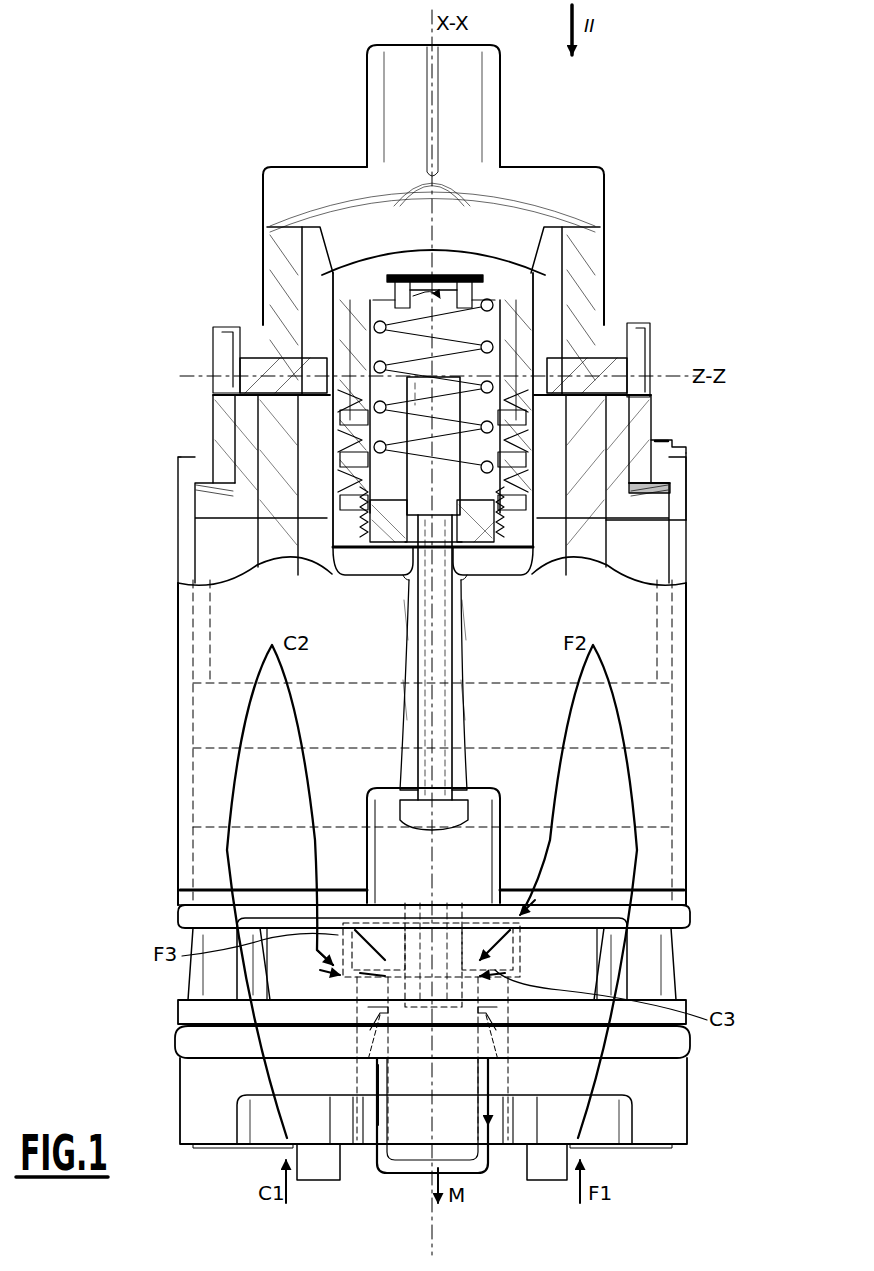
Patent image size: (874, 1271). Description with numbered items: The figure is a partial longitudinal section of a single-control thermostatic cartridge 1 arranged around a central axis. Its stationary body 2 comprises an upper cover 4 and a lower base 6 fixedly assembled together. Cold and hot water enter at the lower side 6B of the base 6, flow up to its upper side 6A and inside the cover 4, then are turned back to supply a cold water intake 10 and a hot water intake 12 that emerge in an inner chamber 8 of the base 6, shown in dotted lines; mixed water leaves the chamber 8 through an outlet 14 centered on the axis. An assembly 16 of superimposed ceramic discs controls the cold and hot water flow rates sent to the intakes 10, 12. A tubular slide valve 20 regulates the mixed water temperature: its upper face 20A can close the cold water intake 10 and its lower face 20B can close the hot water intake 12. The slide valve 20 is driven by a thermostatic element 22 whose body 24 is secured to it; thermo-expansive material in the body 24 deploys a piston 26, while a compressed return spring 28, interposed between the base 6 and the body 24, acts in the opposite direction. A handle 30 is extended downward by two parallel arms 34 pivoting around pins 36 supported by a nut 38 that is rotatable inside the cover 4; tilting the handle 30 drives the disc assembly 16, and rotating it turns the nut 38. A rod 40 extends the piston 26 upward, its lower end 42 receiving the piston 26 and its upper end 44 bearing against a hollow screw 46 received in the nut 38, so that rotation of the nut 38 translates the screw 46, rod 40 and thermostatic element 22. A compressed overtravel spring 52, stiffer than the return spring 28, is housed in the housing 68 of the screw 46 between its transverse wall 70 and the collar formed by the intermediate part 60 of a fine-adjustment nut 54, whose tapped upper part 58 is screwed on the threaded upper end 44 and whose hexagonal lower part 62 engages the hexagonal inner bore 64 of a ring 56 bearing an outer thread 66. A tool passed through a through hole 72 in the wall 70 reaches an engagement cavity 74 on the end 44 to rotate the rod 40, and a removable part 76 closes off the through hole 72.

The single-control thermostatic cartridge 1 is at (150, 692).
The body 2 is at (105, 958).
The upper cover 4 is at (180, 797).
The lower base 6 is at (207, 983).
The upper side of the base 6A is at (660, 825).
The lower side of the base 6B is at (208, 1152).
The inner chamber 8 is at (560, 1058).
The cold water intake 10 is at (520, 920).
The hot water intake 12 is at (380, 1015).
The outlet 14 is at (372, 1110).
The assembly of superimposed ceramic discs 16 is at (212, 607).
The slide valve 20 is at (520, 940).
The upper face of the slide valve 20A is at (383, 920).
The lower face of the slide valve 20B is at (380, 1000).
The thermostatic element 22 is at (478, 1170).
The body of the thermostatic element 24 is at (434, 1119).
The piston 26 is at (500, 820).
The return spring 28 is at (418, 1060).
The handle 30 is at (405, 88).
The arms 34 is at (285, 415).
The pins 36 is at (262, 372).
The nut 38 is at (338, 510).
The rod 40 is at (445, 605).
The lower axial end of the rod 42 is at (446, 775).
The upper end of the rod 44 is at (345, 468).
The screw 46 is at (512, 335).
The overtravel spring 52 is at (480, 300).
The nut 54 is at (745, 433).
The ring 56 is at (560, 560).
The upper axial part of the nut 58 is at (625, 470).
The intermediate axial part of the nut 60 is at (628, 500).
The lower axial part of the nut 62 is at (625, 530).
The inner bore 64 is at (440, 545).
The thread 66 is at (340, 512).
The housing 68 is at (433, 386).
The transverse wall 70 is at (488, 296).
The through hole 72 is at (440, 278).
The engagement cavity 74 is at (540, 385).
The removable part 76 is at (458, 280).